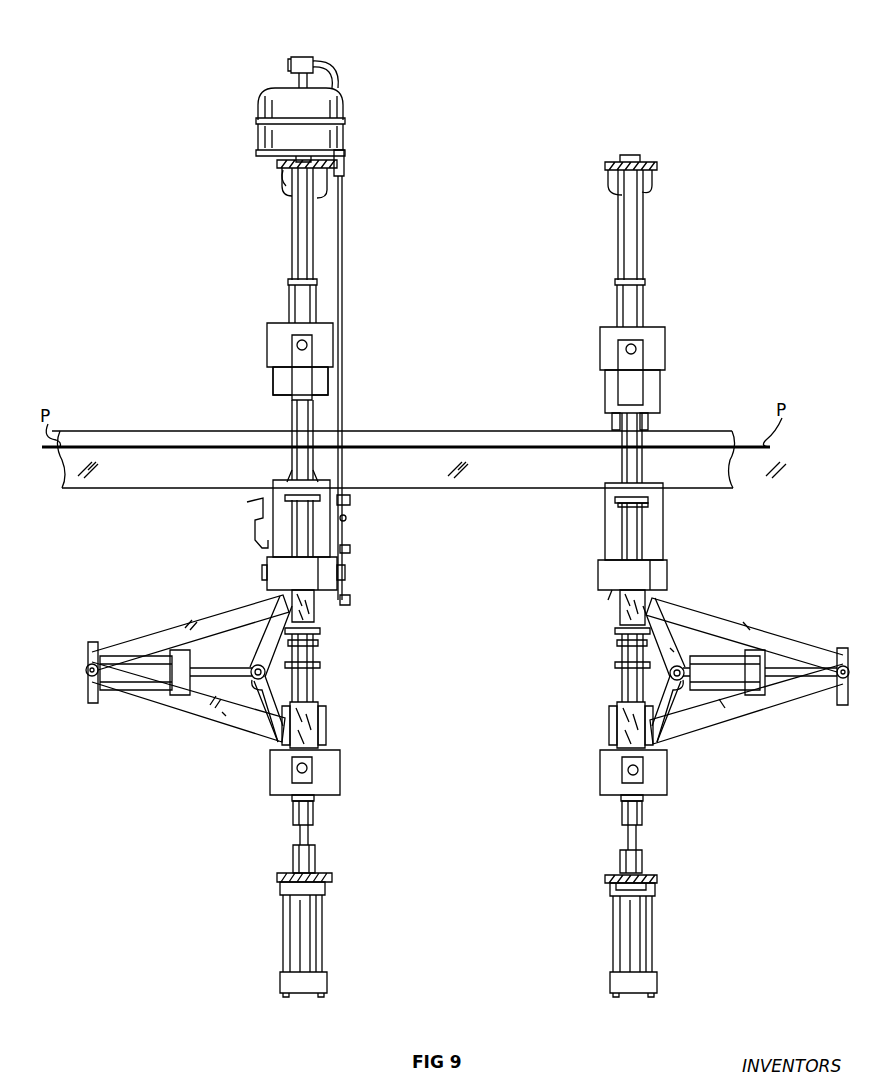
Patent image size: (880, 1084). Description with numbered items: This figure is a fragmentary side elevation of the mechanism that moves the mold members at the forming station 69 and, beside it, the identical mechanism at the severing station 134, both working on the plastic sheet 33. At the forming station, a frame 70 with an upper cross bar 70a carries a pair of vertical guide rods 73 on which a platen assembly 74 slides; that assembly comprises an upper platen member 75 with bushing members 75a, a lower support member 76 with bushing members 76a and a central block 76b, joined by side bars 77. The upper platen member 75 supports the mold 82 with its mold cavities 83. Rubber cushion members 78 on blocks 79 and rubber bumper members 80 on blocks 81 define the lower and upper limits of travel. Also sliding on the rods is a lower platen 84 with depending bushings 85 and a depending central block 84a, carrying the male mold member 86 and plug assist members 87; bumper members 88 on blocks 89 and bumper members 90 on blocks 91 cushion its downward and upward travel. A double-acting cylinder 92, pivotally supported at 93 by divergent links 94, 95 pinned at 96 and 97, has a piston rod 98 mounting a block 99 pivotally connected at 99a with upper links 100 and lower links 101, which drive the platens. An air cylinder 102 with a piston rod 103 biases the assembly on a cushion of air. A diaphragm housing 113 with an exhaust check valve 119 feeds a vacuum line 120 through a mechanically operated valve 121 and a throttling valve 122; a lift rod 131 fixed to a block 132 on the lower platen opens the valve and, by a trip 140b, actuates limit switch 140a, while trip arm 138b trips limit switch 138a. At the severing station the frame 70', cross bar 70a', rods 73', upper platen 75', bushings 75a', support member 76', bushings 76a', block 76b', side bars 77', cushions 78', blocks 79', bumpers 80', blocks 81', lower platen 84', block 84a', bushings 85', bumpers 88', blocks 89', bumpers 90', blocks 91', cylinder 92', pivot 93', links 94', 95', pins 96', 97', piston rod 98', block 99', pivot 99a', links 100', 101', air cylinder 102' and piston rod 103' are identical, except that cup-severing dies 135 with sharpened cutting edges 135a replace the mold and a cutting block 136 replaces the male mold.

The board 33 is at (430, 430).
The forming station 69 is at (348, 330).
The frame 70 is at (247, 189).
The upper cross bar 70a is at (309, 515).
The frame 70' is at (668, 178).
The upper cross bar 70a' is at (670, 509).
The vertical guide rods 73 is at (314, 520).
The vertical guide rods 73' is at (657, 521).
The platen assembly 74 is at (272, 346).
The upper platen member 75 is at (495, 376).
The upper platen 75' is at (662, 348).
The bushing members 75a is at (341, 301).
The bushing members 75a' is at (663, 303).
The lower support member 76 is at (334, 775).
The lower support member 76' is at (614, 780).
The bushing members 76a is at (349, 725).
The bushing members 76a' is at (602, 725).
The central block 76b is at (347, 738).
The central block 76b' is at (602, 736).
The side bars 77 is at (295, 559).
The side bars 77' is at (635, 566).
The rubber cushion members 78 is at (339, 809).
The rubber cushion members 78' is at (597, 815).
The blocks 79 is at (338, 821).
The blocks 79' is at (600, 825).
The rubber bumper members 80 is at (336, 668).
The rubber bumper members 80' is at (600, 677).
The blocks 81 is at (332, 672).
The blocks 81' is at (604, 680).
The mold 82 is at (325, 393).
The mold cavities 83 is at (283, 388).
The lower platen 84 is at (361, 579).
The lower platen 84' is at (691, 575).
The depending central block 84a is at (394, 606).
The depending central block 84a' is at (574, 582).
The depending bushings 85 is at (336, 610).
The depending bushings 85' is at (601, 611).
The male mold member 86 is at (280, 545).
The plug assist members 87 is at (320, 484).
The rubber bumper members 88 is at (332, 637).
The rubber bumper members 88' is at (604, 640).
The blocks 89 is at (334, 651).
The blocks 89' is at (606, 657).
The rubber bumper members 90 is at (378, 522).
The rubber bumper members 90' is at (603, 517).
The blocks 91 is at (350, 497).
The blocks 91' is at (603, 495).
The double-acting pressure fluid actuated cylinder 92 is at (76, 661).
The double-acting pressure fluid actuated cylinder 92' is at (818, 701).
The pivot 93 is at (67, 693).
The pivot 93' is at (846, 706).
The divergent link 94 is at (190, 628).
The divergent link 94' is at (744, 635).
The divergent link 95 is at (188, 712).
The divergent link 95' is at (746, 710).
The pivot pin 96 is at (253, 716).
The pivot pin 96' is at (604, 715).
The pivot pin 97 is at (302, 573).
The pivot pin 97' is at (606, 583).
The piston rod 98 is at (176, 692).
The piston rod 98' is at (760, 667).
The block 99 is at (230, 633).
The block 99' is at (703, 682).
The pivot 99a is at (203, 757).
The pivot 99a' is at (718, 621).
The upper links 100 is at (261, 629).
The upper links 100' is at (685, 631).
The lower links 101 is at (324, 709).
The lower links 101' is at (688, 723).
The air cylinder 102 is at (336, 939).
The air cylinder 102' is at (666, 940).
The piston rod 103 is at (256, 836).
The piston rod 103' is at (673, 836).
The diaphragm housing 113 is at (330, 110).
The exhaust check valve 119 is at (304, 57).
The vacuum line 120 is at (338, 74).
The mechanically operated valve 121 is at (345, 172).
The dial cock throttling valve 122 is at (344, 178).
The valve actuating lift rod 131 is at (343, 240).
The block 132 is at (346, 572).
The severing station 134 is at (662, 336).
The tubular cup-severing dies 135 is at (648, 425).
The sharpened peripheral cutting edges 135a is at (612, 428).
The cutting block 136 is at (655, 525).
The limit switch 138a is at (248, 525).
The trip arm 138b is at (265, 573).
The limit switch 140a is at (350, 500).
The trip 140b is at (350, 548).